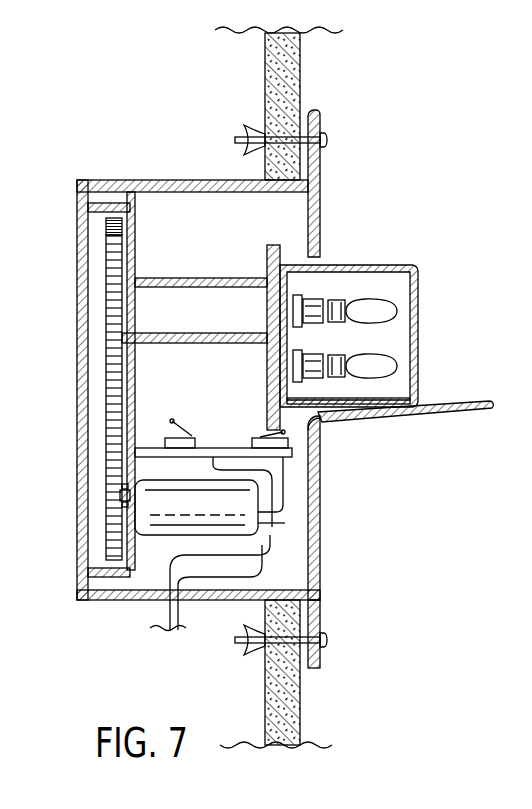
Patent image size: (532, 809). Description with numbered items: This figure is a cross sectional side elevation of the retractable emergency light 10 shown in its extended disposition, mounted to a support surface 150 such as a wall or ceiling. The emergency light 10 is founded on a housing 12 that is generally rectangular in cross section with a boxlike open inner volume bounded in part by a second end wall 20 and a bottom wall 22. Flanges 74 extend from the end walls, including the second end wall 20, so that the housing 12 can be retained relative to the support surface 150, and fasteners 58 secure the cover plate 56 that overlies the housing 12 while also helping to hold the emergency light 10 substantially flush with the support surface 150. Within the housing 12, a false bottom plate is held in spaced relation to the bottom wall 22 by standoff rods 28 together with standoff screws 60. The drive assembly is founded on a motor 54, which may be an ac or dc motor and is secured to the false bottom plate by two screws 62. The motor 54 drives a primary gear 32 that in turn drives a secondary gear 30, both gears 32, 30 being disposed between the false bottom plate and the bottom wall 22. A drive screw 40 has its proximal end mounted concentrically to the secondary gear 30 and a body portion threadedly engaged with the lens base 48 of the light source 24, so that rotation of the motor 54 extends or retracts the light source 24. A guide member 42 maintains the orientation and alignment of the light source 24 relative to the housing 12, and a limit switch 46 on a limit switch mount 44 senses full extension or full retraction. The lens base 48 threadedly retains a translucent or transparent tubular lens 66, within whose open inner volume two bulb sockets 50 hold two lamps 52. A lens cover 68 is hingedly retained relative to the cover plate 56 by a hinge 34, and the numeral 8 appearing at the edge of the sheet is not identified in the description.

The display sign 8 is at (2, 158).
The emergency light 10 is at (455, 141).
The housing 12 is at (70, 378).
The second end wall 20 is at (97, 600).
The bottom wall 22 is at (77, 220).
The light source 24 is at (430, 325).
The standoff rods 28 is at (100, 568).
The secondary gear 30 is at (106, 295).
The primary gear 32 is at (108, 490).
The hinge 34 is at (325, 430).
The drive screw 40 is at (170, 345).
The guide member 42 is at (205, 278).
The limit switch mount 44 is at (300, 457).
The limit switch 46 is at (158, 437).
The lens base 48 is at (292, 312).
The bulb sockets 50 is at (317, 296).
The lamps 52 is at (380, 301).
The motor 54 is at (265, 523).
The cover plate 56 is at (320, 573).
The fasteners 58 is at (332, 641).
The standoff screws 60 is at (140, 602).
The screws 62 is at (138, 485).
The lens 66 is at (417, 393).
The lens cover 68 is at (433, 412).
The flanges 74 is at (308, 112).
The support surface 150 is at (265, 62).